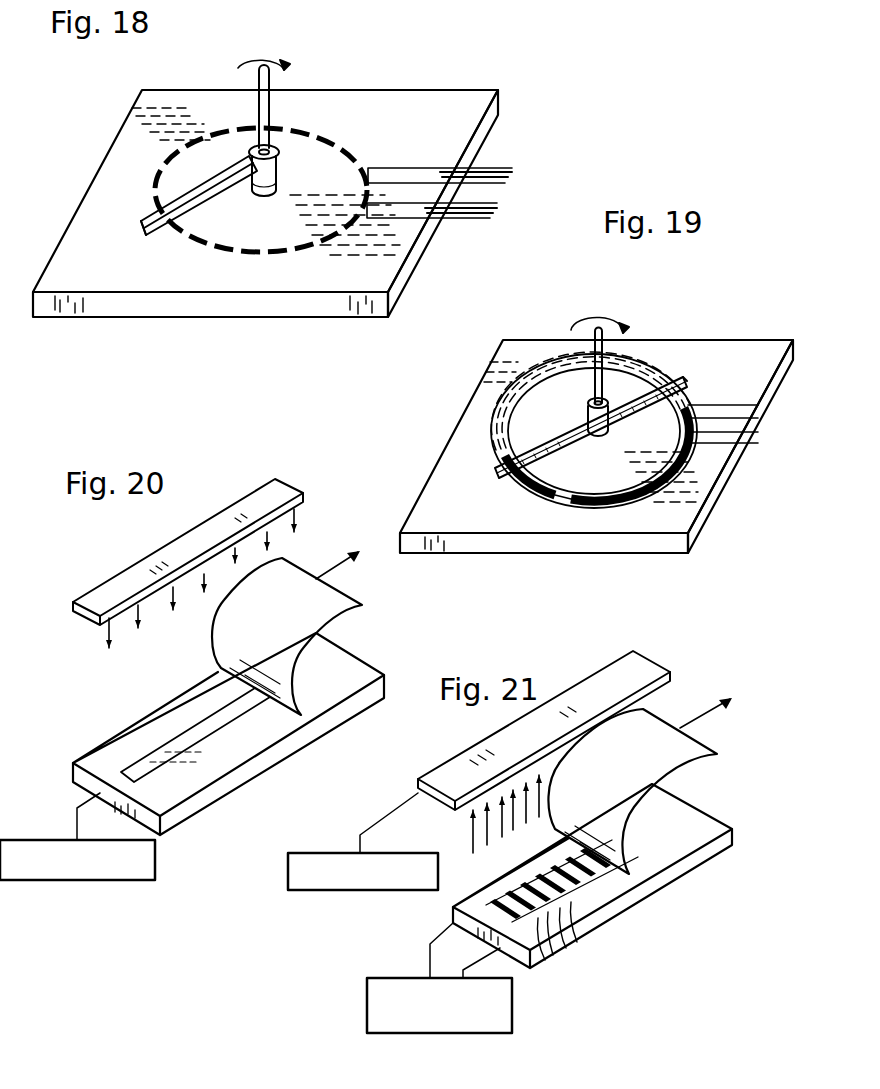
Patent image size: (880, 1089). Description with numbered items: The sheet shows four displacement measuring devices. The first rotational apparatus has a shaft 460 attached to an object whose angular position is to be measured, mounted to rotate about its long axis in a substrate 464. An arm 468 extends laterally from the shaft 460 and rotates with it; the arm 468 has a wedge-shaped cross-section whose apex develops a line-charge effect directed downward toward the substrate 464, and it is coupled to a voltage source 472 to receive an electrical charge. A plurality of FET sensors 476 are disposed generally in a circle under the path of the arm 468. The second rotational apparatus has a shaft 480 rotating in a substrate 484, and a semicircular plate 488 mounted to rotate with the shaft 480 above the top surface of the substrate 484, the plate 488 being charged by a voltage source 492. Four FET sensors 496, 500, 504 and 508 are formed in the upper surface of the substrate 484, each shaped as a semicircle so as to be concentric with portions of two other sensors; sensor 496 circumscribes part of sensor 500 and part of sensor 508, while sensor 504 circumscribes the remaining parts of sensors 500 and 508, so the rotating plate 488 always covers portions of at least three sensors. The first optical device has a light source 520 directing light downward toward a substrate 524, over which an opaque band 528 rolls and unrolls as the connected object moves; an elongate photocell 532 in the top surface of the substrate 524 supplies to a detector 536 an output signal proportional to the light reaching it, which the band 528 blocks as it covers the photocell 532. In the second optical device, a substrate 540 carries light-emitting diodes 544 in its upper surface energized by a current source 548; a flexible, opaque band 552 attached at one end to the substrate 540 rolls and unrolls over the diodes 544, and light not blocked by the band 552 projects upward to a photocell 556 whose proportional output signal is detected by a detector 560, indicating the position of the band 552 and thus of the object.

In FIG. 18, the shaft 460 is at (267, 112).
In FIG. 18, the substrate 464 is at (108, 302).
In FIG. 18, the arm 468 is at (146, 221).
In FIG. 18, the voltage source 472 is at (275, 148).
In FIG. 18, the FET sensors 476 is at (352, 228).
In FIG. 19, the shaft 480 is at (605, 362).
In FIG. 19, the substrate 484 is at (585, 543).
In FIG. 19, the semicircular plate 488 is at (680, 403).
In FIG. 19, the voltage source 492 is at (540, 358).
In FIG. 19, the FET sensor 496 is at (690, 530).
In FIG. 19, the FET sensor 500 is at (700, 463).
In FIG. 19, the FET sensor 504 is at (756, 418).
In FIG. 19, the FET sensor 508 is at (541, 477).
In FIG. 20, the light source 520 is at (116, 590).
In FIG. 20, the substrate 524 is at (208, 792).
In FIG. 20, the opaque band 528 is at (336, 610).
In FIG. 20, the photocell 532 is at (252, 708).
In FIG. 20, the detector 536 is at (155, 857).
In FIG. 21, the substrate 540 is at (632, 893).
In FIG. 21, the light-emitting diodes 544 is at (555, 945).
In FIG. 21, the current source 548 is at (512, 1010).
In FIG. 21, the flexible opaque band 552 is at (717, 754).
In FIG. 21, the photocell 556 is at (660, 667).
In FIG. 21, the detector 560 is at (360, 890).